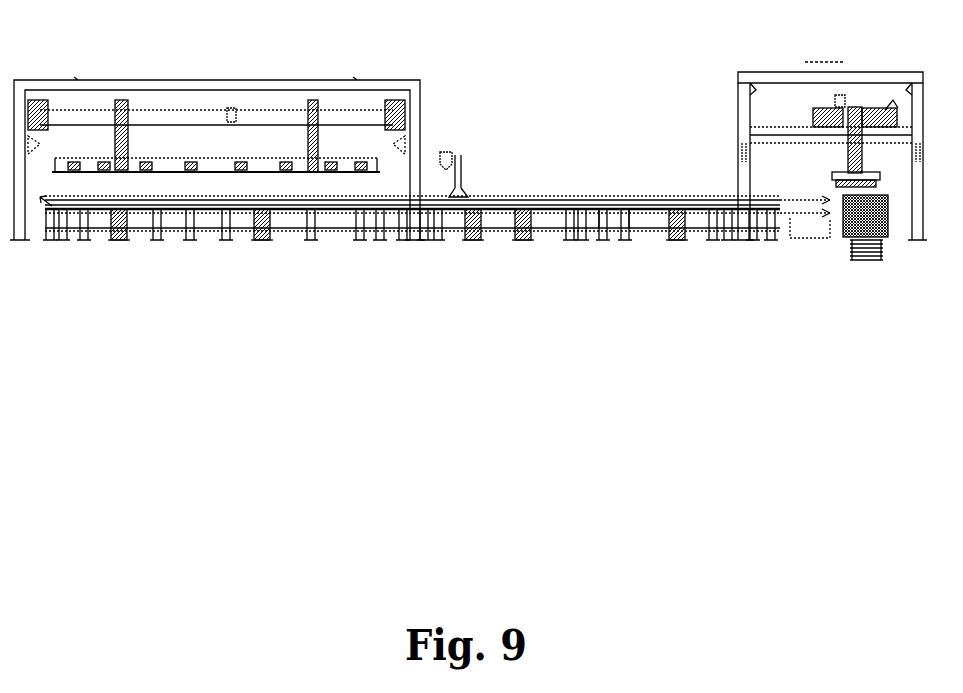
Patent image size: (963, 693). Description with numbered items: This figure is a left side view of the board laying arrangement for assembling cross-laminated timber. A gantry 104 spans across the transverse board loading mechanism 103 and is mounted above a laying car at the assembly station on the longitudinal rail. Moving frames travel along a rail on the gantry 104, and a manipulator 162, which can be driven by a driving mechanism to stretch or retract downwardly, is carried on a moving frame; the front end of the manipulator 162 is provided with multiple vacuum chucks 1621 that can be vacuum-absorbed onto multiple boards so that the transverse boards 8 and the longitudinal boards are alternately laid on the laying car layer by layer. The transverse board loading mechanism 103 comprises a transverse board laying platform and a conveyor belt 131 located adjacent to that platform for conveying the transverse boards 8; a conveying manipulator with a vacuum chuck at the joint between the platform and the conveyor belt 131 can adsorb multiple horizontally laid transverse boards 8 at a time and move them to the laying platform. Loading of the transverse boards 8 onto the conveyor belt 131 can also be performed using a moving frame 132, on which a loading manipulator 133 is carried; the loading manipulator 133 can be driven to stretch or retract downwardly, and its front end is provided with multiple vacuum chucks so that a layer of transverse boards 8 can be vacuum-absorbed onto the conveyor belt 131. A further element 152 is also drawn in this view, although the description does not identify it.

The transverse boards 8 is at (842, 217).
The transverse board loading mechanism 103 is at (435, 236).
The gantry 104 is at (322, 88).
The conveyor belt 131 is at (602, 217).
The moving frame 132 is at (817, 112).
The loading manipulator 133 is at (848, 160).
The sliding block 152 is at (248, 118).
The manipulator 162 is at (129, 118).
The vacuum chucks 1621 is at (152, 166).